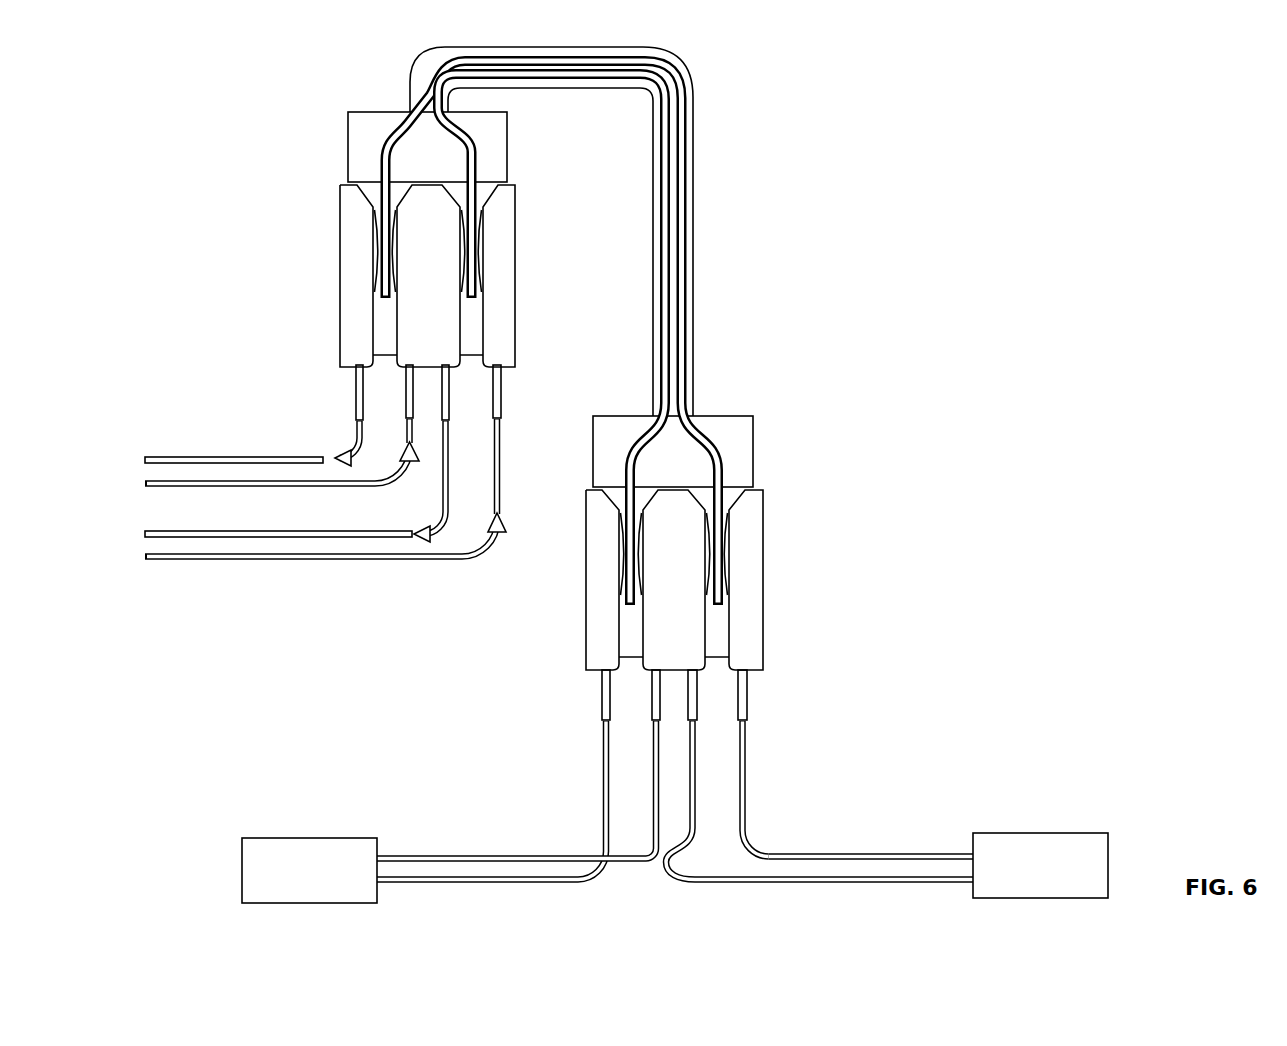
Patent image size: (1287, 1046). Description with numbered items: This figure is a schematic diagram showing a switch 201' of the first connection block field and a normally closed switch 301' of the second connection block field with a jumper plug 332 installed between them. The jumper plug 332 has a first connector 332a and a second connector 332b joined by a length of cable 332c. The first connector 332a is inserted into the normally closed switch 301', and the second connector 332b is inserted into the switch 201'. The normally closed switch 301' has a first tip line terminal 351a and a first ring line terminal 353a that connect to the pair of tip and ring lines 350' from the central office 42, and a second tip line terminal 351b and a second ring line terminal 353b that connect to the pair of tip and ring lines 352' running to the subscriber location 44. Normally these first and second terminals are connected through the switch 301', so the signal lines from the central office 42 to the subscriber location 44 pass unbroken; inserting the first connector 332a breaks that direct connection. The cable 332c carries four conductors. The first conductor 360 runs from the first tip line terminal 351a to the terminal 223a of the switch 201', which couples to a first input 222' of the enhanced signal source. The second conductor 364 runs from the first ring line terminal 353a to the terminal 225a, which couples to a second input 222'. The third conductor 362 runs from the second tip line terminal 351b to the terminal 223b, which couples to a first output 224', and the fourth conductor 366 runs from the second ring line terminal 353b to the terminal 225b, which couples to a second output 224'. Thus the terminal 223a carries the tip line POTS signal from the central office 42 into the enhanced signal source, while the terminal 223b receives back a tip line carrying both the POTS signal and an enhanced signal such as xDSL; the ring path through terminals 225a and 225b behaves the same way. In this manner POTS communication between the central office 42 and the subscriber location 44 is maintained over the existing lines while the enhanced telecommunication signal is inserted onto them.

The switch of the first connection block field 201' is at (468, 276).
The normally closed switch 301' is at (716, 580).
The jumper plug 332 is at (596, 326).
The first connector 332a is at (755, 470).
The second connector 332b is at (508, 152).
The length of cable 332c is at (693, 122).
The first conductor 360 is at (625, 472).
The third conductor 362 is at (643, 437).
The second conductor 364 is at (693, 430).
The fourth conductor 366 is at (720, 447).
The first terminal of the switch 223a is at (356, 383).
The third terminal of the switch 223b is at (404, 410).
The second terminal of the switch 225a is at (452, 389).
The fourth terminal of the switch 225b is at (503, 383).
The input to the enhanced signal source 222' is at (278, 482).
The output of the enhanced signal source 224' is at (325, 488).
The first tip line terminal 351a is at (602, 690).
The second tip line terminal 351b is at (655, 712).
The first ring line terminal 353a is at (697, 712).
The second ring line terminal 353b is at (747, 695).
The pair of tip and ring lines from the central office 350' is at (511, 872).
The pair of tip and ring lines to the subscriber location 352' is at (834, 872).
The central office 42 is at (290, 838).
The subscriber location 44 is at (1022, 833).